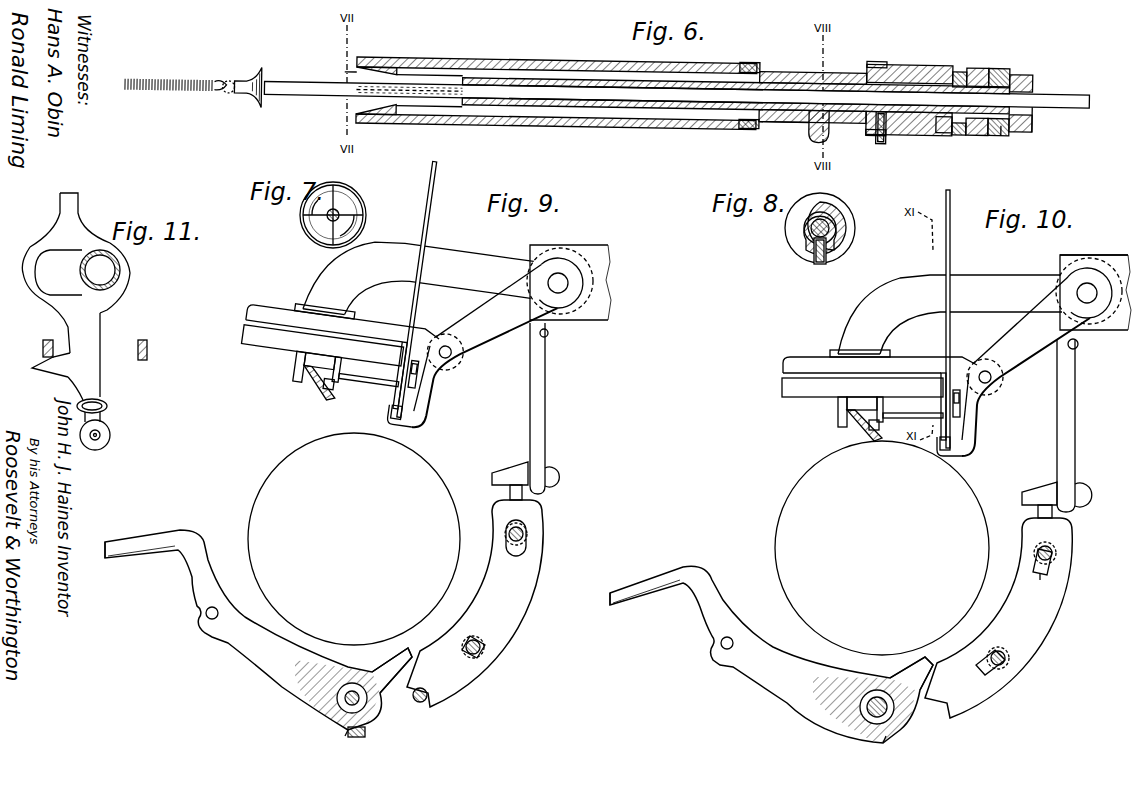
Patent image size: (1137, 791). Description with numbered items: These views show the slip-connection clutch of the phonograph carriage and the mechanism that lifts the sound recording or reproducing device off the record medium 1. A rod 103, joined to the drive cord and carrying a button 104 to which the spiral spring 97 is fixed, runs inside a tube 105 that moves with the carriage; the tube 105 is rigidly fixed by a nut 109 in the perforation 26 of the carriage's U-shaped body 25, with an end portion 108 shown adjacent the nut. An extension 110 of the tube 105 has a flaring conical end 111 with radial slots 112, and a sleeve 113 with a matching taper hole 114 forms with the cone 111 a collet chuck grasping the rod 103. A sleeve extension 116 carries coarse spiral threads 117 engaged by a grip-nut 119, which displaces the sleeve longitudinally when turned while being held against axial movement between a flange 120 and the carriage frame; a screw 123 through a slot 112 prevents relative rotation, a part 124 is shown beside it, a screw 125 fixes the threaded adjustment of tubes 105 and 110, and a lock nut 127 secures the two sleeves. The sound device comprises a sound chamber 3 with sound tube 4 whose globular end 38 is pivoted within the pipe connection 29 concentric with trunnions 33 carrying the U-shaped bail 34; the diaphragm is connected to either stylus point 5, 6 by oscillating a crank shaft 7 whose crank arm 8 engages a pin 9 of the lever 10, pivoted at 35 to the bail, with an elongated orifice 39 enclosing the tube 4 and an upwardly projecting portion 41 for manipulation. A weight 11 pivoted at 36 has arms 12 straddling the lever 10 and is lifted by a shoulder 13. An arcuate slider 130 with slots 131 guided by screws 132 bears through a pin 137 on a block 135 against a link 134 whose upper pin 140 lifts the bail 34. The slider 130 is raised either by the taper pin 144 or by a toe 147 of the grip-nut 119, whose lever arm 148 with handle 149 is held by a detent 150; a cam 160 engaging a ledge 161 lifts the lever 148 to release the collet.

In FIG. 9, the record medium 1 is at (354, 539).
In FIG. 10, the record medium 1 is at (882, 548).
In FIG. 9, the sound chamber 3 is at (283, 350).
In FIG. 10, the sound chamber 3 is at (862, 387).
In FIG. 9, the sound tube 4 is at (418, 285).
In FIG. 10, the sound tube 4 is at (949, 314).
In FIG. 11, the sound tube 4 is at (100, 270).
In FIG. 9, the stylus point 5 is at (338, 392).
In FIG. 10, the stylus point 5 is at (875, 422).
In FIG. 9, the stylus point 6 is at (322, 398).
In FIG. 10, the stylus point 6 is at (868, 428).
In FIG. 9, the crank shaft 7 is at (388, 390).
In FIG. 10, the crank shaft 7 is at (920, 416).
In FIG. 9, the crank arm 8 is at (432, 390).
In FIG. 10, the crank arm 8 is at (962, 405).
In FIG. 9, the pin 9 is at (430, 378).
In FIG. 10, the pin 9 is at (960, 396).
In FIG. 9, the lever 10 is at (418, 300).
In FIG. 10, the lever 10 is at (948, 318).
In FIG. 11, the lever 10 is at (84, 356).
In FIG. 9, the weight 11 is at (283, 320).
In FIG. 10, the weight 11 is at (810, 362).
In FIG. 9, the arms 12 is at (404, 340).
In FIG. 10, the arms 12 is at (962, 368).
In FIG. 11, the arms 12 is at (92, 341).
In FIG. 11, the shoulder 13 is at (32, 367).
In FIG. 6, the U-shaped body 25 is at (1000, 66).
In FIG. 6, the perforation 26 is at (998, 132).
In FIG. 10, the pipe connection 29 is at (1102, 258).
In FIG. 9, the trunnions 33 is at (570, 284).
In FIG. 10, the trunnions 33 is at (1077, 292).
In FIG. 9, the bail 34 is at (499, 344).
In FIG. 10, the bail 34 is at (1037, 362).
In FIG. 9, the pivot 35 is at (420, 420).
In FIG. 10, the pivot 35 is at (955, 456).
In FIG. 11, the pivot 35 is at (111, 434).
In FIG. 9, the pivot 36 is at (458, 358).
In FIG. 10, the pivot 36 is at (992, 379).
In FIG. 9, the globular terminal end 38 is at (560, 252).
In FIG. 10, the globular terminal end 38 is at (1062, 265).
In FIG. 11, the elongated orifice 39 is at (76, 298).
In FIG. 9, the upwardly projecting portion 41 is at (442, 168).
In FIG. 10, the upwardly projecting portion 41 is at (950, 193).
In FIG. 11, the upwardly projecting portion 41 is at (70, 193).
In FIG. 6, the spiral spring connection 97 is at (186, 82).
In FIG. 6, the rod 103 is at (318, 91).
In FIG. 7, the rod 103 is at (328, 220).
In FIG. 9, the rod 103 is at (344, 702).
In FIG. 6, the button 104 is at (255, 100).
In FIG. 6, the tube 105 is at (965, 132).
In FIG. 8, the tube 105 is at (812, 228).
In FIG. 6, the end cap 108 is at (1040, 127).
In FIG. 6, the nut 109 is at (1028, 82).
In FIG. 6, the tube extension 110 is at (603, 106).
In FIG. 8, the tube extension 110 is at (838, 236).
In FIG. 6, the conical end 111 is at (392, 85).
In FIG. 7, the conical end 111 is at (332, 215).
In FIG. 6, the radial slots 112 is at (390, 86).
In FIG. 7, the radial slots 112 is at (340, 190).
In FIG. 6, the sleeve 113 is at (560, 62).
In FIG. 7, the sleeve 113 is at (303, 218).
In FIG. 6, the taper hole 114 is at (393, 62).
In FIG. 6, the sleeve extension 116 is at (798, 70).
In FIG. 8, the sleeve extension 116 is at (792, 224).
In FIG. 6, the spiral threads 117 is at (876, 60).
In FIG. 6, the grip-nut 119 is at (916, 66).
In FIG. 8, the grip-nut 119 is at (850, 222).
In FIG. 6, the flange 120 is at (960, 66).
In FIG. 6, the screw 123 is at (812, 132).
In FIG. 6, the collar 124 is at (786, 122).
In FIG. 6, the screw 125 is at (884, 140).
In FIG. 8, the screw 125 is at (816, 260).
In FIG. 6, the lock nut 127 is at (758, 62).
In FIG. 9, the slider 130 is at (475, 603).
In FIG. 10, the slider 130 is at (998, 618).
In FIG. 9, the slots 131 is at (526, 530).
In FIG. 10, the slots 131 is at (1050, 575).
In FIG. 10, the screws 132 is at (998, 655).
In FIG. 9, the link 134 is at (530, 414).
In FIG. 10, the link 134 is at (1058, 437).
In FIG. 9, the block 135 is at (494, 472).
In FIG. 10, the block 135 is at (1035, 489).
In FIG. 9, the pin 137 is at (508, 492).
In FIG. 10, the pin 137 is at (1036, 513).
In FIG. 9, the pin 140 is at (548, 337).
In FIG. 10, the pin 140 is at (1077, 347).
In FIG. 9, the taper pin 144 is at (420, 703).
In FIG. 9, the toe 147 is at (392, 670).
In FIG. 10, the toe 147 is at (896, 690).
In FIG. 9, the lever arm 148 is at (258, 630).
In FIG. 10, the lever arm 148 is at (771, 654).
In FIG. 9, the handle 149 is at (152, 541).
In FIG. 10, the handle 149 is at (648, 580).
In FIG. 9, the detent 150 is at (205, 614).
In FIG. 10, the detent 150 is at (720, 645).
In FIG. 9, the cam 160 is at (366, 734).
In FIG. 9, the ledge 161 is at (346, 733).
In FIG. 10, the ledge 161 is at (878, 745).